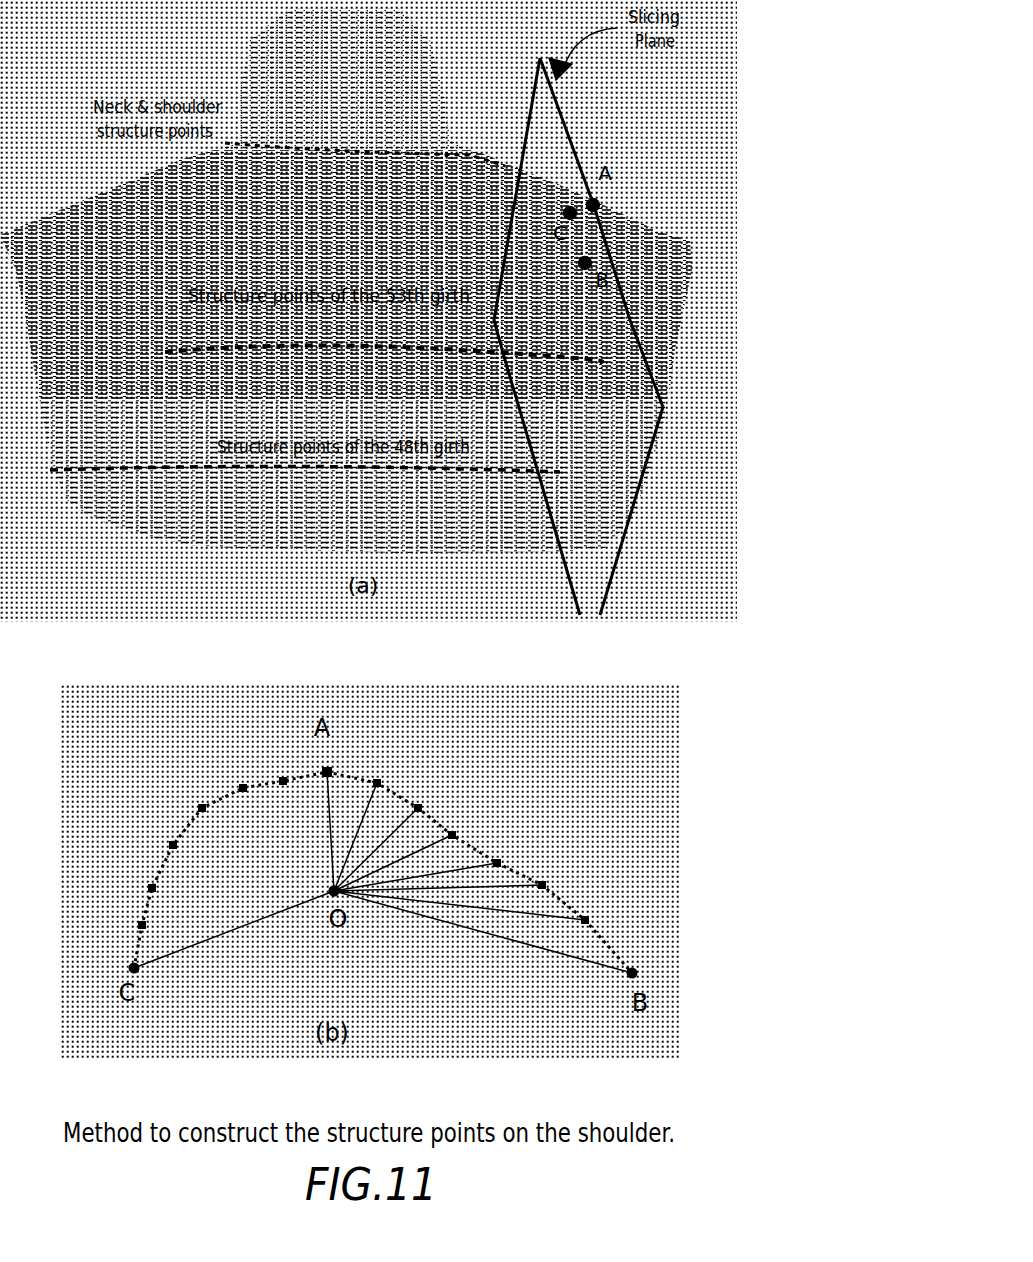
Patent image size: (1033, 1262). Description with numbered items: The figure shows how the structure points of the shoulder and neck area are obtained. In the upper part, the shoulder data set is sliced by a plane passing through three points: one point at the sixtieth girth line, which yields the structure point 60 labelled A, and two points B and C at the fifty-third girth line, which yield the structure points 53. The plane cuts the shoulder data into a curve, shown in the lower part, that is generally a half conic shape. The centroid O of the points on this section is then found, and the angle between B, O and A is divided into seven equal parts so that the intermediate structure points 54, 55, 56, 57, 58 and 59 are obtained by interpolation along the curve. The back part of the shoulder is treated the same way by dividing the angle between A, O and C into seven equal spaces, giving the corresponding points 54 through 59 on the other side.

The 53rd girth line structure point 53 is at (380, 968).
The 54th structure point 54 is at (363, 926).
The 55th structure point 55 is at (352, 889).
The 56th structure point 56 is at (333, 851).
The 57th structure point 57 is at (323, 813).
The 58th structure point 58 is at (327, 788).
The 59th structure point 59 is at (335, 768).
The 60th girth line structure point 60 is at (328, 760).